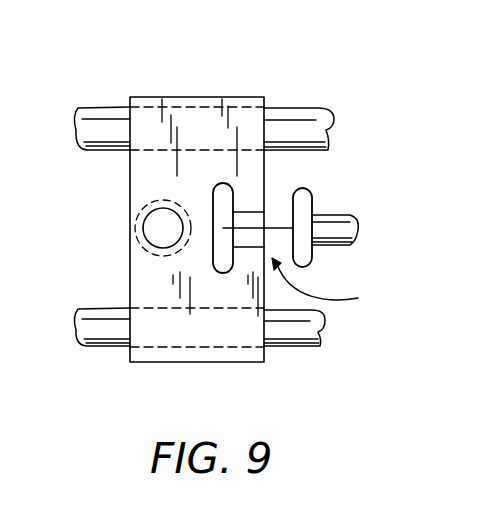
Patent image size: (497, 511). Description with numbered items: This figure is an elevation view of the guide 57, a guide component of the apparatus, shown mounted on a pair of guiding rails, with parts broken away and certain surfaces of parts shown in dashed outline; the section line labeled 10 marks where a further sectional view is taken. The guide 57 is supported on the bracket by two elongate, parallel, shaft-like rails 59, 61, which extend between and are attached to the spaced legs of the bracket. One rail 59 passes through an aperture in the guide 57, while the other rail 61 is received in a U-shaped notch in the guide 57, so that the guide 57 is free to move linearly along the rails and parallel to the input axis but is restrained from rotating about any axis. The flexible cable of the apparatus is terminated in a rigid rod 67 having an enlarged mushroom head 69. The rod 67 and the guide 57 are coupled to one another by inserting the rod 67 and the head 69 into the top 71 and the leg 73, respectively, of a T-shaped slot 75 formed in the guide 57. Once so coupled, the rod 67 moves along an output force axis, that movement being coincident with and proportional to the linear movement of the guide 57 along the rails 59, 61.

The section line 10- 10 is at (54, 105).
The guide 57 is at (128, 182).
The rail 59 is at (286, 106).
The rail 61 is at (285, 349).
The rigid rod 67 is at (343, 215).
The mushroom head 69 is at (304, 188).
The top 71 is at (223, 183).
The leg 73 is at (246, 198).
The T-shaped slot 75 is at (334, 286).